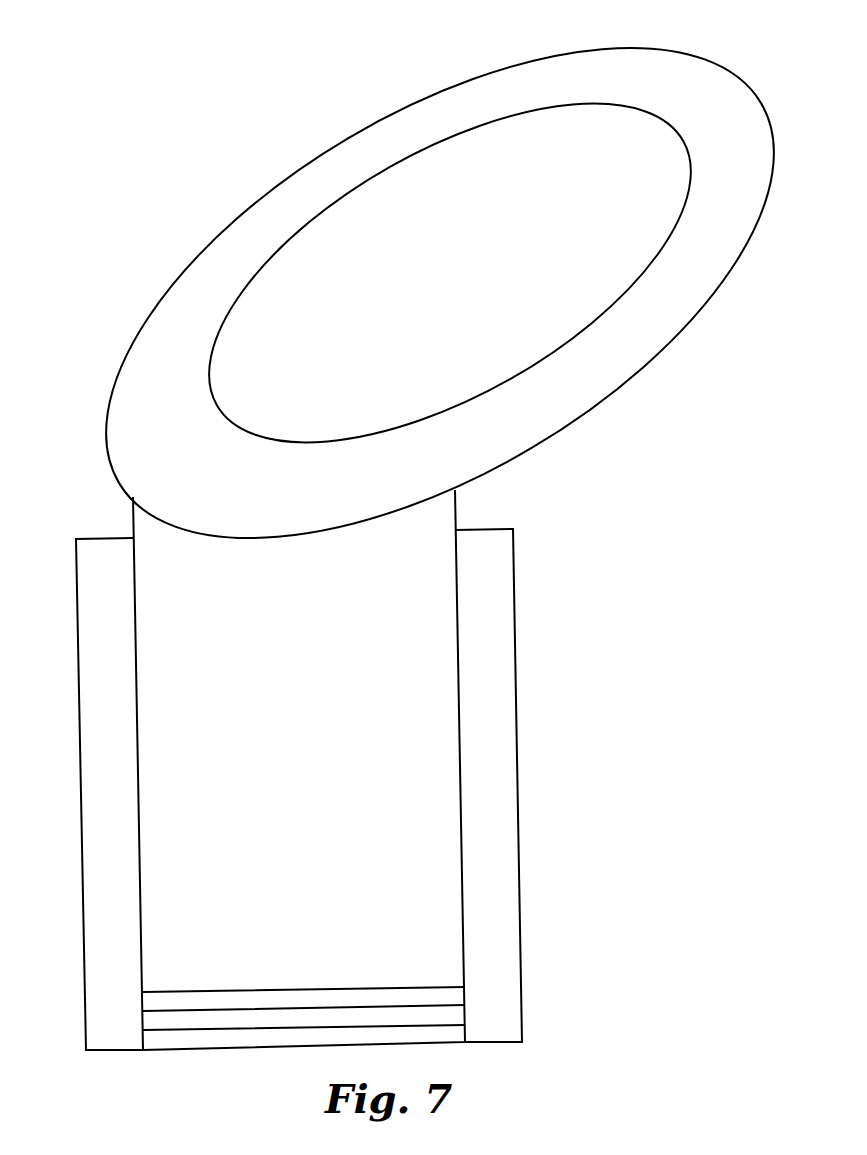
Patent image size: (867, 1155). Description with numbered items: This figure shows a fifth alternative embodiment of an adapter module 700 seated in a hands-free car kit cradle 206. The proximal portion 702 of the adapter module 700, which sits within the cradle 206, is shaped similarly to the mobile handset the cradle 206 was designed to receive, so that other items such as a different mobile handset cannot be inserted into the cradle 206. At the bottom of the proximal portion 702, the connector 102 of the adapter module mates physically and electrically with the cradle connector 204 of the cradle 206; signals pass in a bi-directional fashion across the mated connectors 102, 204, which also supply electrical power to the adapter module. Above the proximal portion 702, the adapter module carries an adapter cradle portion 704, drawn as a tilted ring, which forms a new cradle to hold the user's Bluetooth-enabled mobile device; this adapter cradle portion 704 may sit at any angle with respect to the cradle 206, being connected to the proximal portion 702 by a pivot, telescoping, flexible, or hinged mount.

The adapter module 700 is at (443, 88).
The adapter cradle portion 704 is at (408, 155).
The proximal portion 702 is at (455, 508).
The hands-free car kit cradle 206 is at (515, 648).
The cradle connector 204 is at (143, 1037).
The connector 102 is at (465, 992).